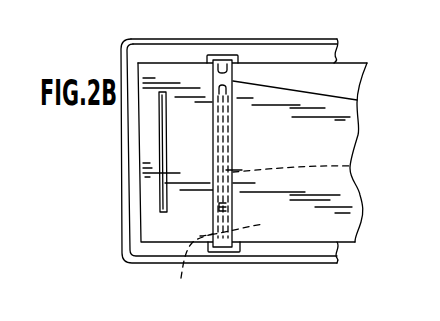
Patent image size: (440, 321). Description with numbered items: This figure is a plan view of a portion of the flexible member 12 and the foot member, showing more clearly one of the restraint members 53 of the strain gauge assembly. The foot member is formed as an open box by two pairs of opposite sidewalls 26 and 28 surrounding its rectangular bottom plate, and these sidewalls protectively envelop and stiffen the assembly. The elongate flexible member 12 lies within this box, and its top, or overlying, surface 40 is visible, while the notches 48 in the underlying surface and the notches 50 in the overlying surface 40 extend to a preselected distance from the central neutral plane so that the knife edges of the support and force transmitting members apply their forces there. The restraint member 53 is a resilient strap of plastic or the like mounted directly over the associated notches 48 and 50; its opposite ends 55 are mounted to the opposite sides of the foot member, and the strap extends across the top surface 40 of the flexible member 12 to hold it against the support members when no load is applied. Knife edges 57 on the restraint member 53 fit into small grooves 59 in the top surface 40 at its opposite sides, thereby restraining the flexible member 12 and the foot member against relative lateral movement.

The flexible member 12 is at (357, 87).
The sidewalls 26 is at (338, 39).
The sidewalls 28 is at (123, 192).
The overlying surface 40 is at (342, 197).
The notches 48 is at (352, 166).
The notches 50 is at (159, 143).
The restraint member 53 is at (357, 100).
The opposite ends 55 is at (222, 55).
The knife edges 57 is at (196, 266).
The grooves 59 is at (263, 224).